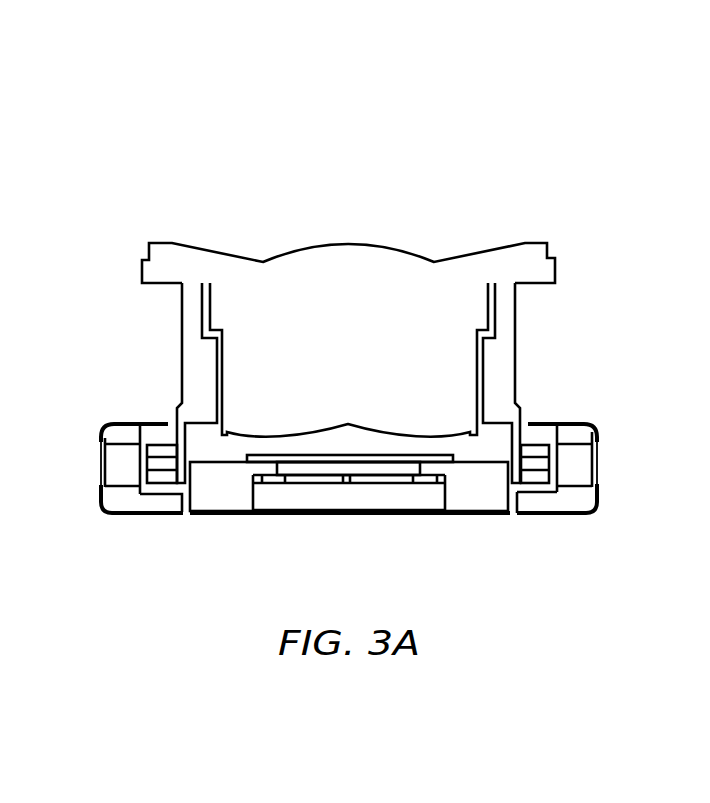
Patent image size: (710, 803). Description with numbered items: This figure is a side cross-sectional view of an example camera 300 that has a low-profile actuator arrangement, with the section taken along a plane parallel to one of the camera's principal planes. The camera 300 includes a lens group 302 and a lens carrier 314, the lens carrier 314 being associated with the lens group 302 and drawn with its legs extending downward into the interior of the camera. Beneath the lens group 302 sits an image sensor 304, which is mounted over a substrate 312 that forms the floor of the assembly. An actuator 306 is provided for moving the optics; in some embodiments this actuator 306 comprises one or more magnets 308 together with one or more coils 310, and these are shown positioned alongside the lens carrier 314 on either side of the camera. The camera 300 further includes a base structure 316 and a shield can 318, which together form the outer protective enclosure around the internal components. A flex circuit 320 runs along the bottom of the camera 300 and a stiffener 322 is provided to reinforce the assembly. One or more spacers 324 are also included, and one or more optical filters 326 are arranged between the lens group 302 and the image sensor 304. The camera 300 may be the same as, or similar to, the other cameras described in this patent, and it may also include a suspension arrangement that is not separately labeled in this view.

The camera 300 is at (154, 148).
The lens group 302 is at (391, 240).
The image sensor 304 is at (392, 478).
The actuator 306 is at (142, 430).
The magnet 308 is at (584, 470).
The coil 310 is at (533, 446).
The substrate 312 is at (481, 503).
The lens carrier 314 is at (509, 343).
The base structure 316 is at (590, 500).
The shield can 318 is at (125, 421).
The flex circuit 320 is at (333, 515).
The stiffener 322 is at (98, 490).
The spacer 324 is at (583, 434).
The optical filter 326 is at (317, 459).